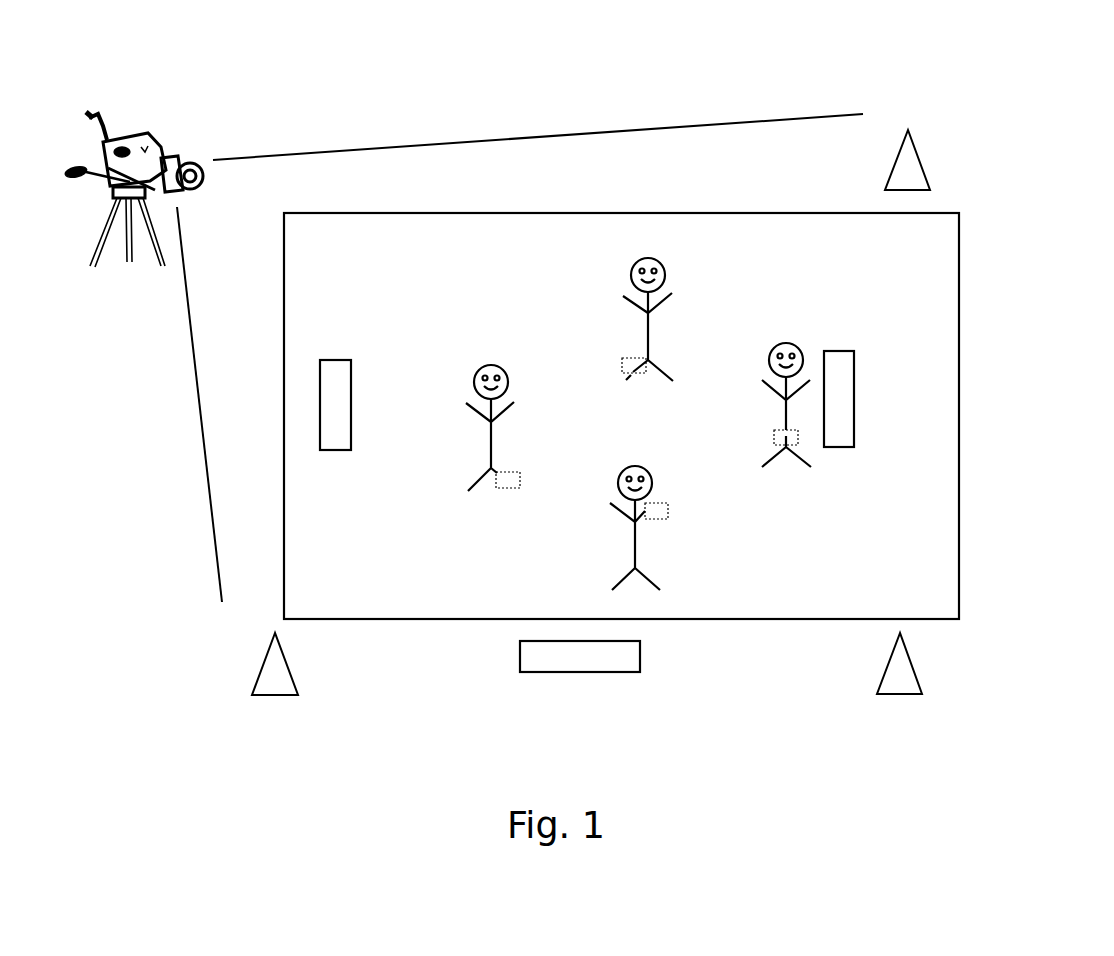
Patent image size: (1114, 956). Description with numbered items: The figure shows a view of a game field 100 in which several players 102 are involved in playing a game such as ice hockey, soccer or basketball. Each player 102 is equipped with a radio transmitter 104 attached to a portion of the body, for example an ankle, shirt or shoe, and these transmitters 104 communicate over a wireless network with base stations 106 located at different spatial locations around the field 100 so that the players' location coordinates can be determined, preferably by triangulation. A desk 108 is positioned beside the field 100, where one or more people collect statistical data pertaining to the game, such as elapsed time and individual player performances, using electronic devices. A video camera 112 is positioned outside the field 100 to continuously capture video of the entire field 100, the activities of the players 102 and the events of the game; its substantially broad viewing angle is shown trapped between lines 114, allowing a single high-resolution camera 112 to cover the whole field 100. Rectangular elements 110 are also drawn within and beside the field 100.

The field 100 is at (960, 244).
The players 102 is at (664, 290).
The radio transmitter 104 is at (624, 358).
The base stations 106 is at (920, 160).
The desk 108 is at (580, 672).
The goal 110 is at (855, 395).
The video camera 112 is at (117, 270).
The lines 114 is at (415, 144).